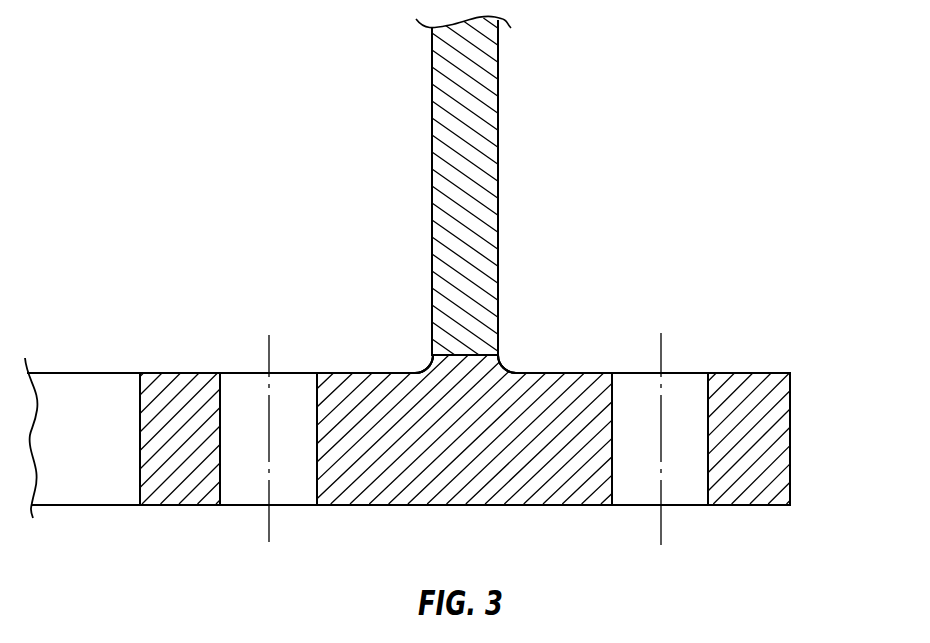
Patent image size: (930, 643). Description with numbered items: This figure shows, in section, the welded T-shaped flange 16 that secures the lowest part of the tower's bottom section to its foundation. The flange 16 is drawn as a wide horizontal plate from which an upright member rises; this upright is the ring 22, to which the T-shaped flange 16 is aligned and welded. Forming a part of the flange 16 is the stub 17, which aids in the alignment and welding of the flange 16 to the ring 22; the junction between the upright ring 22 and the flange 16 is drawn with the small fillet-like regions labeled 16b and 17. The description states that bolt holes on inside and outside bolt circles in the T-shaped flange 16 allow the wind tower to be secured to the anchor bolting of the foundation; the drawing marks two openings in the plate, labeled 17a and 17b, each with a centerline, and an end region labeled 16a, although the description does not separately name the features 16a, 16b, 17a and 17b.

The T-shaped flange 16 is at (471, 505).
The base plate end portion 16a is at (790, 435).
The weld fillet 16b is at (420, 366).
The stub 17 is at (505, 362).
The bolt hole 17a is at (247, 493).
The bolt hole 17b is at (686, 493).
The ring 22 is at (499, 128).